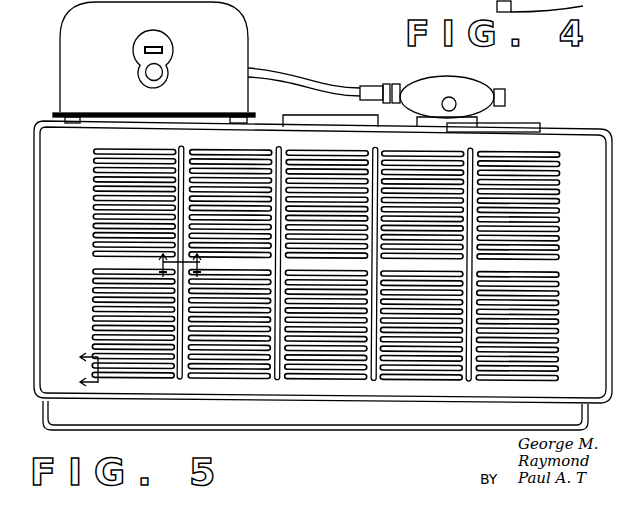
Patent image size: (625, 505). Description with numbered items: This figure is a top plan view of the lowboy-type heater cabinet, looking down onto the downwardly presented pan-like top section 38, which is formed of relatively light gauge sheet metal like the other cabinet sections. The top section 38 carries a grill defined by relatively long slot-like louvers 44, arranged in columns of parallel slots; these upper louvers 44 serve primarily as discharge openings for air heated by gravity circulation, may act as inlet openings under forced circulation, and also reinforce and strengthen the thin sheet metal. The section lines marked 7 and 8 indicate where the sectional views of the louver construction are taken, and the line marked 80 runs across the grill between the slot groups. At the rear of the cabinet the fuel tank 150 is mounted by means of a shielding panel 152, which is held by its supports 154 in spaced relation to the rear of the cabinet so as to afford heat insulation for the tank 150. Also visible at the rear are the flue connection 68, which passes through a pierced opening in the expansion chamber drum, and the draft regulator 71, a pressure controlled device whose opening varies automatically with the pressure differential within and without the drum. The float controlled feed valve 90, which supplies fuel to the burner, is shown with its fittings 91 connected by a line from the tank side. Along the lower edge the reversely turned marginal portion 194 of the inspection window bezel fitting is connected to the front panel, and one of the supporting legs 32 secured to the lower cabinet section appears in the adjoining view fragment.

The top section 38 is at (598, 160).
The reversely turned marginal portion 194 is at (380, 437).
The louvers 44 is at (214, 148).
The divider bars 80 is at (367, 260).
The section line 7- 7 is at (181, 252).
The section line 8- 8 is at (78, 372).
The fuel tank 150 is at (166, 24).
The shielding panel 152 is at (104, 112).
The supports 154 is at (234, 116).
The flue connection 68 is at (299, 116).
The fittings 91 is at (386, 85).
The float controlled feed valve 90 is at (460, 83).
The draft regulator 71 is at (512, 125).
The supporting legs 32 is at (551, 10).